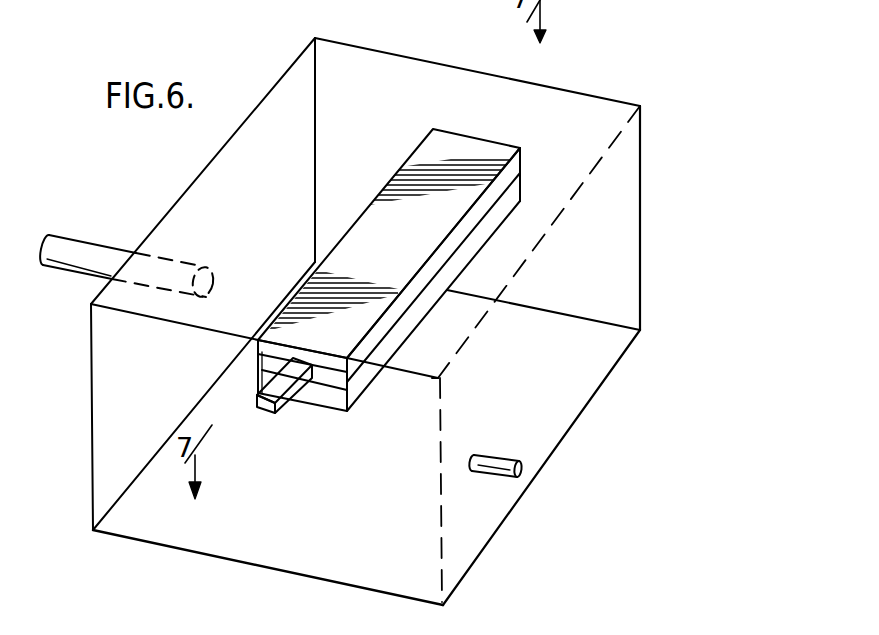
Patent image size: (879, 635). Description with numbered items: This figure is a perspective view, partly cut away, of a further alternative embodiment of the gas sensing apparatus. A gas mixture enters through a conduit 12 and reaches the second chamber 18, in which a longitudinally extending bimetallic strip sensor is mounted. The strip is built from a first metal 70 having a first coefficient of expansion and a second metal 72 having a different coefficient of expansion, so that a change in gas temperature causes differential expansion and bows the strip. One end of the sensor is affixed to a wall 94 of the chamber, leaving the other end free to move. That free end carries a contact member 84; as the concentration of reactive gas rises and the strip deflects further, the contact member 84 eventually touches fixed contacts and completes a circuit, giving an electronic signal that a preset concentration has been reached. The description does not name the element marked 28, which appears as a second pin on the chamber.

The conduit 12 is at (72, 248).
The second chamber 18 is at (114, 349).
The second alignment pin 28 is at (485, 477).
The first metal 70 is at (503, 210).
The second metal 72 is at (523, 165).
The contact member 84 is at (279, 385).
The wall 94 is at (625, 199).